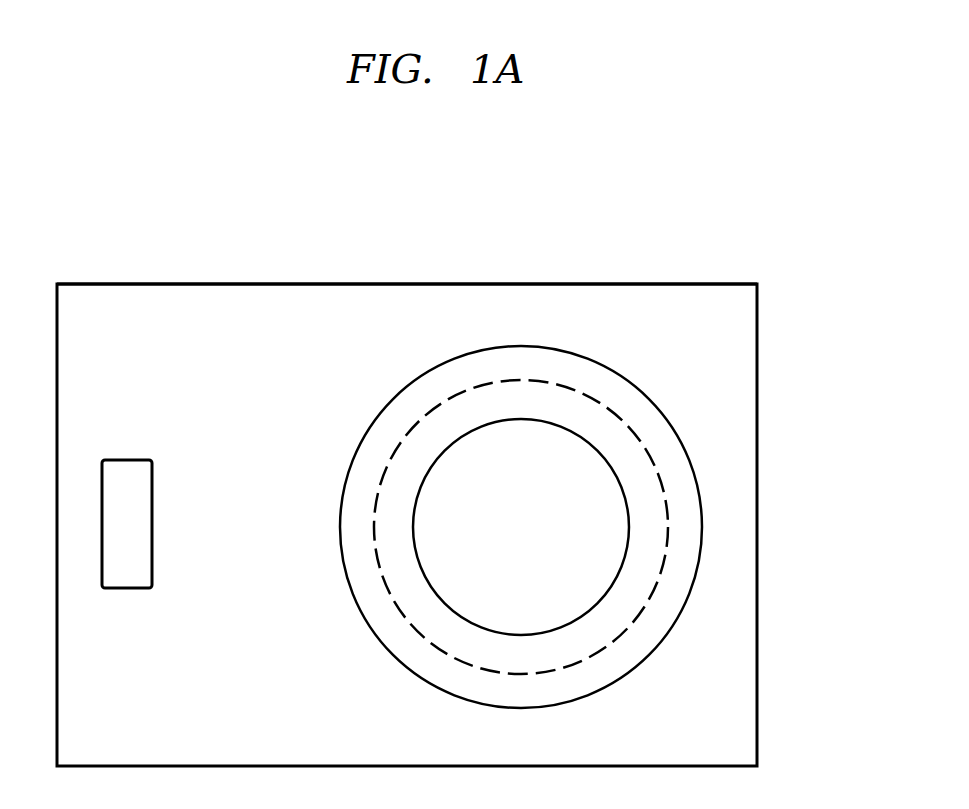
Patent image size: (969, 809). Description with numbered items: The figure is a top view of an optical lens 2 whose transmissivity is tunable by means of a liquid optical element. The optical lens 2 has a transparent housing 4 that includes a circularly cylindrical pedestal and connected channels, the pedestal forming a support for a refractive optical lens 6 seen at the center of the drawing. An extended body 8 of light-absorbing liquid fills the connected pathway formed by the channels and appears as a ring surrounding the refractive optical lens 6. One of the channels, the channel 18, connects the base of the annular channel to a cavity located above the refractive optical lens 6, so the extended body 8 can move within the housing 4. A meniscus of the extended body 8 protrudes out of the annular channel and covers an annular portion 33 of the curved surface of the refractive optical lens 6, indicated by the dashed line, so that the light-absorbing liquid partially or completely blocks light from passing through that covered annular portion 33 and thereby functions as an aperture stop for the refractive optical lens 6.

The optical lens 2 is at (828, 242).
The housing 4 is at (207, 420).
The refractive optical lens 6 is at (512, 545).
The extended body of light-absorbing liquid 8 is at (513, 692).
The channel 18 is at (142, 543).
The annular portion 33 is at (380, 561).